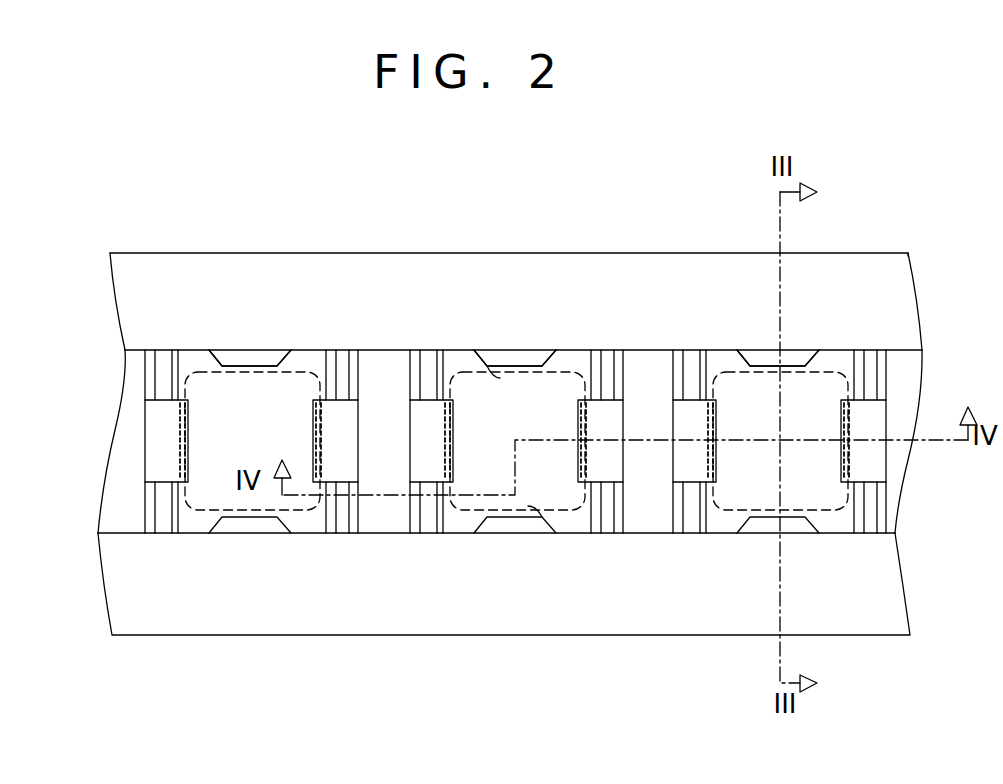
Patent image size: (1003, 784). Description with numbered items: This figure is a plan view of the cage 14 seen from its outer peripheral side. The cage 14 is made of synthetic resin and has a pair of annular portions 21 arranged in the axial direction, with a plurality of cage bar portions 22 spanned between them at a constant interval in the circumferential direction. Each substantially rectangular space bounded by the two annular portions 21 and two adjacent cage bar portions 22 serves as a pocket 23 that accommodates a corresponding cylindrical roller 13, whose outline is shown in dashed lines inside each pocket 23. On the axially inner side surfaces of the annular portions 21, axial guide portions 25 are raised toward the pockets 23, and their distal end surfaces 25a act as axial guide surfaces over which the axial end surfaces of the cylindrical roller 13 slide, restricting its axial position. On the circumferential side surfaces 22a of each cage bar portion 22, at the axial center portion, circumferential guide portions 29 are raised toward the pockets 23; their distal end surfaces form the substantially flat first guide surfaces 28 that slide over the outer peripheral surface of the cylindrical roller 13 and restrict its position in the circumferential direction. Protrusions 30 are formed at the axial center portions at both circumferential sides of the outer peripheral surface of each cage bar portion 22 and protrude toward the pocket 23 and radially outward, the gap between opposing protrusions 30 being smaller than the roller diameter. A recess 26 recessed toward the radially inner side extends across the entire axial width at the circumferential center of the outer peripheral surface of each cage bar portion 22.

The cylindrical roller 13 is at (207, 345).
The cage 14 is at (624, 247).
The annular portion 21 is at (158, 277).
The cage bar portion 22 is at (122, 367).
The circumferential side surface 22a is at (322, 517).
The pocket 23 is at (265, 388).
The axial guide portion 25 is at (253, 360).
The distal end surface 25a is at (493, 377).
The recess 26 is at (125, 463).
The first guide surface 28 is at (313, 420).
The circumferential guide portion 29 is at (497, 433).
The protrusion 30 is at (190, 416).